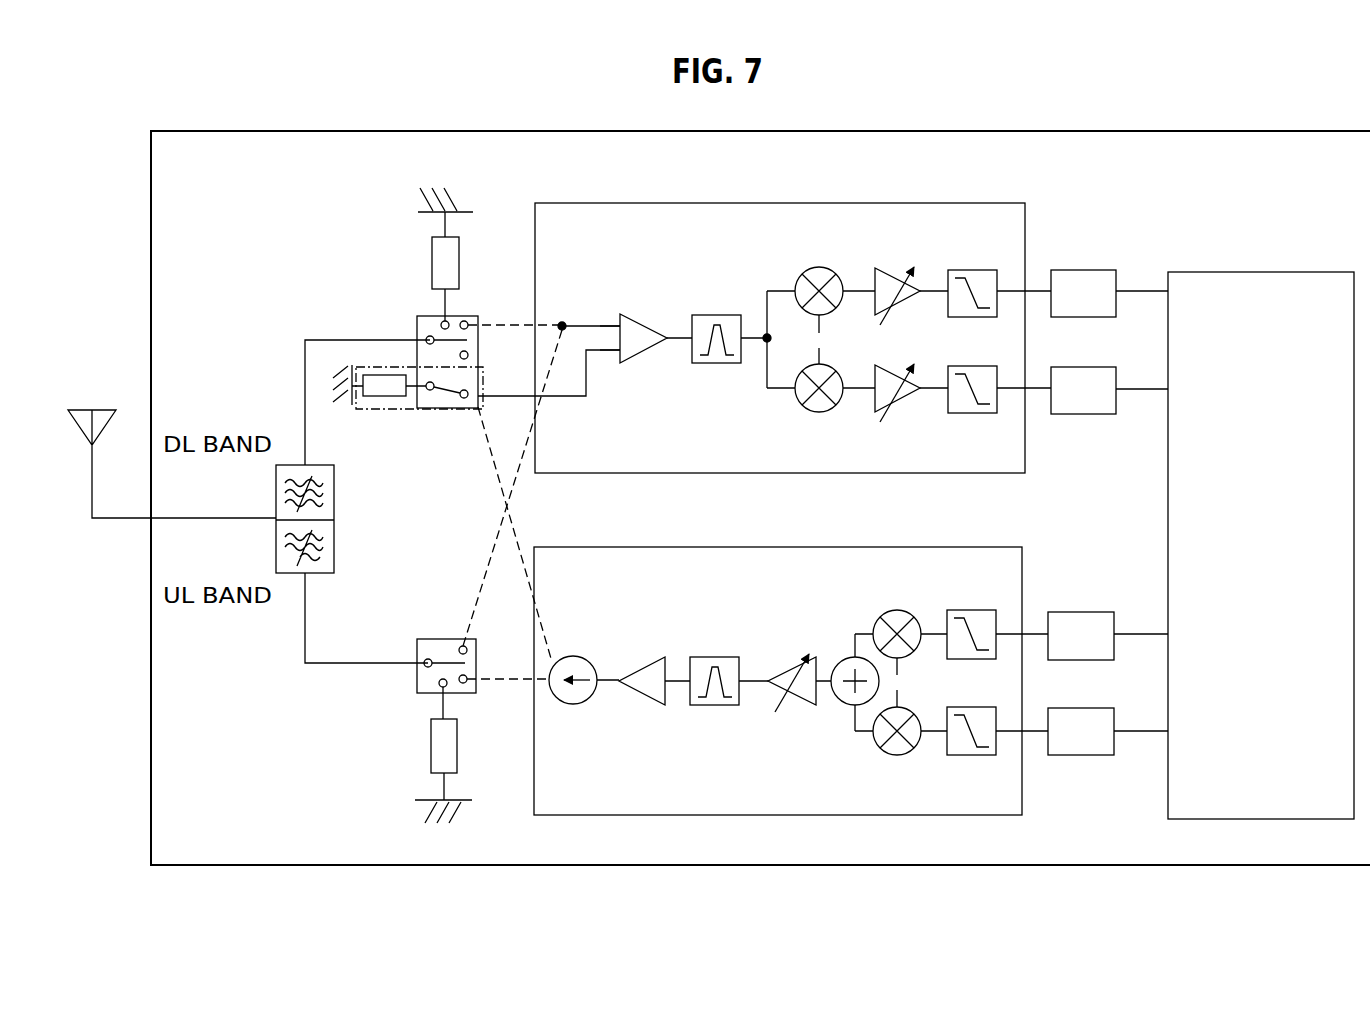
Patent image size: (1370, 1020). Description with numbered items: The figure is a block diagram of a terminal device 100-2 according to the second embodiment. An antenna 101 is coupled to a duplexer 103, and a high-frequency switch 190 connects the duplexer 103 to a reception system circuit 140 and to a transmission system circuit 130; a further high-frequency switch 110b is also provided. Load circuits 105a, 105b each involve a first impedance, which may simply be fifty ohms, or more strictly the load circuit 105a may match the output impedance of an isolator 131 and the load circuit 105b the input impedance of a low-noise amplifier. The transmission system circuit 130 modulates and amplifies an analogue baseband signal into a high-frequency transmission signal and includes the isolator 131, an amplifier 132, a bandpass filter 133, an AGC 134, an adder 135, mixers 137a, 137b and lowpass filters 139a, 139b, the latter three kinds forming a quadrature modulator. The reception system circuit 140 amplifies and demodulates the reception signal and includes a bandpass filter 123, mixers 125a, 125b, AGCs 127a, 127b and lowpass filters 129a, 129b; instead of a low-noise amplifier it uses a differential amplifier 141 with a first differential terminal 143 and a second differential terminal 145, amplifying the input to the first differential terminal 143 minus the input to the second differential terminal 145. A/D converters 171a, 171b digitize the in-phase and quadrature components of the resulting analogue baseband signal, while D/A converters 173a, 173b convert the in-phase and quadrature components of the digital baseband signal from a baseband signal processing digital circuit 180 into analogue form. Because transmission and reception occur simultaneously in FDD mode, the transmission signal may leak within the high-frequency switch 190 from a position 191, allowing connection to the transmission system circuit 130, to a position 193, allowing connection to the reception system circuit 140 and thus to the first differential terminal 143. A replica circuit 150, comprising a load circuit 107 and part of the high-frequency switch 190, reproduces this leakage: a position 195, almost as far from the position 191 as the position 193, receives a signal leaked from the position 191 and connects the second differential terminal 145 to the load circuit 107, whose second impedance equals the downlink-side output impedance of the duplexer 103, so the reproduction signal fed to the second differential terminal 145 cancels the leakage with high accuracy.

The terminal device 100-2 is at (1228, 131).
The antenna 101 is at (82, 410).
The duplexer 103 is at (276, 545).
The load circuit 105a is at (432, 255).
The load circuit 105b is at (431, 745).
The load circuit 107 is at (375, 396).
The high-frequency switch 110b is at (433, 639).
The bandpass filter 123 is at (716, 315).
The mixer 125a is at (819, 267).
The mixer 125b is at (819, 412).
The AGC 127a is at (893, 268).
The AGC 127b is at (900, 412).
The lowpass filter 129a is at (973, 270).
The lowpass filter 129b is at (972, 413).
The transmission system circuit 130 is at (935, 547).
The isolator 131 is at (573, 704).
The amplifier 132 is at (643, 657).
The bandpass filter 133 is at (715, 657).
The AGC 134 is at (797, 657).
The adder 135 is at (845, 705).
The mixer 137a is at (897, 610).
The mixer 137b is at (897, 757).
The lowpass filter 139a is at (972, 610).
The lowpass filter 139b is at (972, 757).
The reception system circuit 140 is at (937, 203).
The differential amplifier 141 is at (640, 312).
The first differential terminal 143 is at (618, 314).
The second differential terminal 145 is at (612, 355).
The replica circuit 150 is at (420, 409).
The A/D converter 171a is at (1080, 270).
The A/D converter 171b is at (1085, 414).
The D/A converter 173a is at (1079, 612).
The D/A converter 173b is at (1082, 757).
The baseband signal processing digital circuit 180 is at (1262, 272).
The high-frequency switch 190 is at (417, 318).
The position 191 is at (468, 355).
The position 193 is at (470, 322).
The position 195 is at (465, 400).